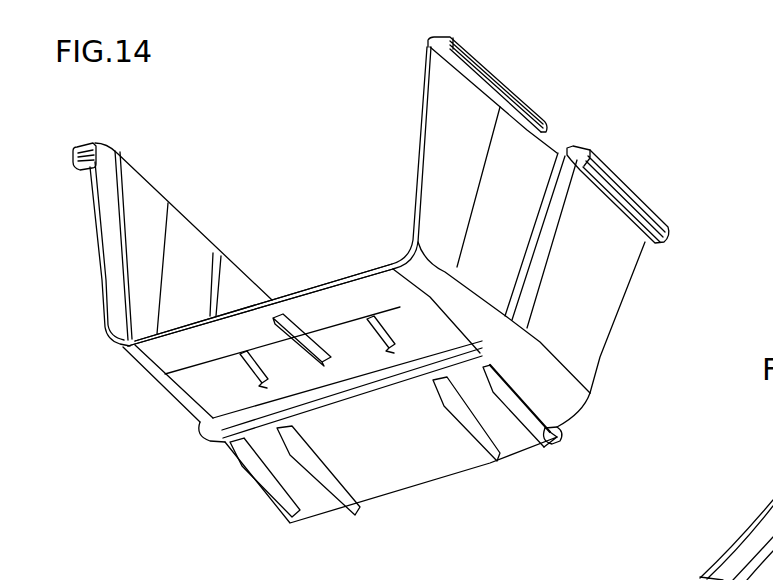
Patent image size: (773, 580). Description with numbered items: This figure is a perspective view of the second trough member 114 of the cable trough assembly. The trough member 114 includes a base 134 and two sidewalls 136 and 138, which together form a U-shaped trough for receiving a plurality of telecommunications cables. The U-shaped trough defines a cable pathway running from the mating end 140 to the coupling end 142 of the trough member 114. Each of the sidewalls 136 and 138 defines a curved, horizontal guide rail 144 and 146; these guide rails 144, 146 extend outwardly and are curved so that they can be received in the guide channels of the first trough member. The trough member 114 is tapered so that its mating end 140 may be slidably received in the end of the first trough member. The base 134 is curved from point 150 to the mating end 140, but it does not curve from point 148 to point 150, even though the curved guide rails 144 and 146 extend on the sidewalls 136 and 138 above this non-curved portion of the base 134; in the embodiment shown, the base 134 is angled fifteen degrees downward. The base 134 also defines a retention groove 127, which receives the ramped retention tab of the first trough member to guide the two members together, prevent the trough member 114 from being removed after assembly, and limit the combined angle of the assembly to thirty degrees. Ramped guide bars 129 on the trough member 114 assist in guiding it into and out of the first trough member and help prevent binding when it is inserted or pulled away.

The trough member 114 is at (683, 138).
The retention groove 127 is at (303, 350).
The ramped guide bars 129 is at (264, 387).
The base 134 is at (390, 453).
The sidewall 136 is at (232, 280).
The sidewall 138 is at (593, 287).
The mating end 140 is at (183, 327).
The coupling end 142 is at (603, 360).
The guide rail 144 is at (87, 145).
The guide rail 146 is at (477, 60).
The point 148 is at (560, 163).
The point 150 is at (200, 367).